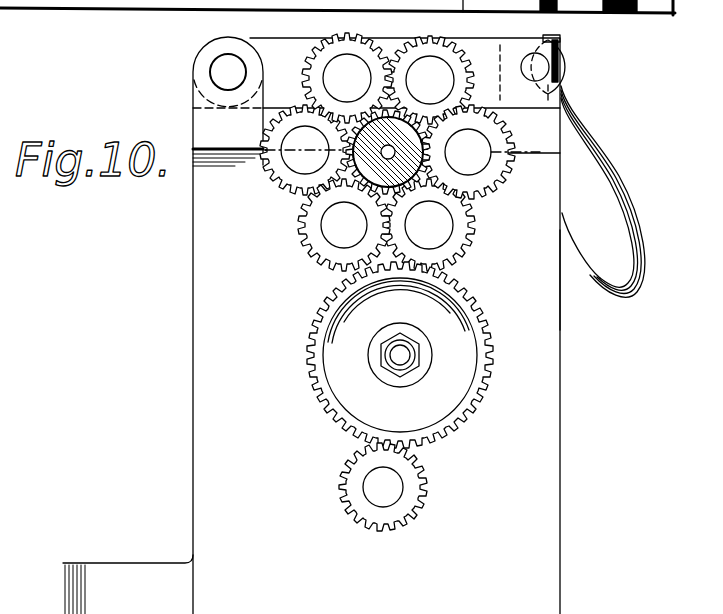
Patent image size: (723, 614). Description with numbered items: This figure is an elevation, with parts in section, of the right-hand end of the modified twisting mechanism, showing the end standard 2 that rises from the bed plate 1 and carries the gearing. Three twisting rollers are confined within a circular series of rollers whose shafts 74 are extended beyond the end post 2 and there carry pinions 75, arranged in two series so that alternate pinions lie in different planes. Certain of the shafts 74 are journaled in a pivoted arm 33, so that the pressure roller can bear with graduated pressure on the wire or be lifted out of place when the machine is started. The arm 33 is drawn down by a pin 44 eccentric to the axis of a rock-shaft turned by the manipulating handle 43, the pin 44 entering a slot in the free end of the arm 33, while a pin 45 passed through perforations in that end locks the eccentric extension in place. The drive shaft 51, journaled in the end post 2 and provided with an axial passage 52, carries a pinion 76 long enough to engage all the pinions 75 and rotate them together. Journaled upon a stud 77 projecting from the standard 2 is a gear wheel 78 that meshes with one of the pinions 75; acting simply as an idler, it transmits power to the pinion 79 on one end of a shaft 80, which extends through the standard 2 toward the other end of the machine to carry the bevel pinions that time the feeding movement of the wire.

The bed plate 1 is at (311, 325).
The standard 2 is at (561, 280).
The arm 33 is at (253, 68).
The manipulating handle 43 is at (610, 166).
The pin 44 is at (546, 66).
The pin 45 is at (558, 76).
The drive shaft 51 is at (362, 185).
The axial passage 52 is at (393, 152).
The shaft 74 is at (440, 70).
The pinion 75 is at (358, 50).
The pinion 76 is at (366, 120).
The stud 77 is at (396, 355).
The gear wheel 78 is at (467, 385).
The pinion 79 is at (412, 476).
The shaft 80 is at (380, 487).